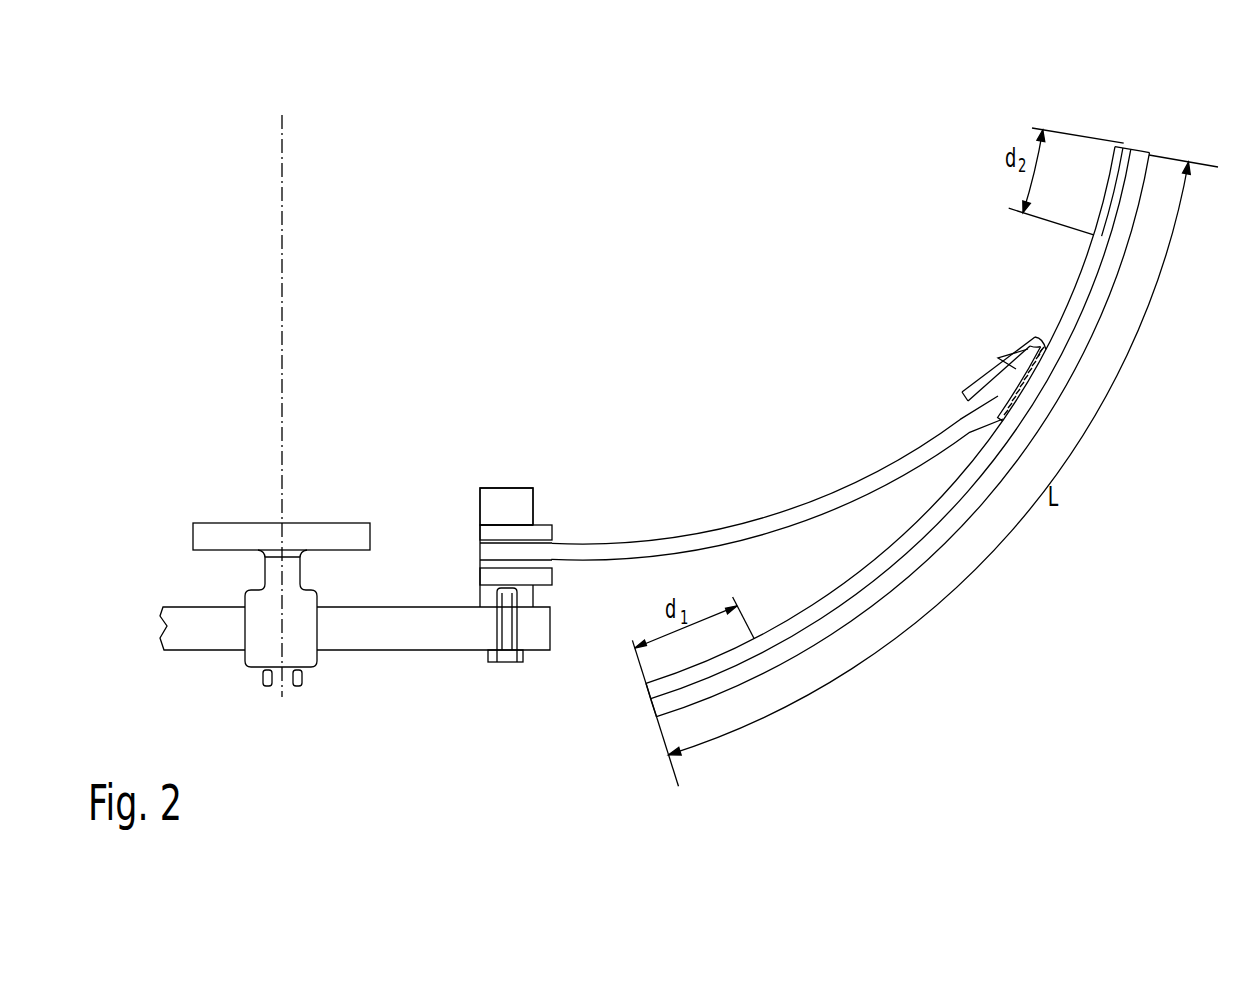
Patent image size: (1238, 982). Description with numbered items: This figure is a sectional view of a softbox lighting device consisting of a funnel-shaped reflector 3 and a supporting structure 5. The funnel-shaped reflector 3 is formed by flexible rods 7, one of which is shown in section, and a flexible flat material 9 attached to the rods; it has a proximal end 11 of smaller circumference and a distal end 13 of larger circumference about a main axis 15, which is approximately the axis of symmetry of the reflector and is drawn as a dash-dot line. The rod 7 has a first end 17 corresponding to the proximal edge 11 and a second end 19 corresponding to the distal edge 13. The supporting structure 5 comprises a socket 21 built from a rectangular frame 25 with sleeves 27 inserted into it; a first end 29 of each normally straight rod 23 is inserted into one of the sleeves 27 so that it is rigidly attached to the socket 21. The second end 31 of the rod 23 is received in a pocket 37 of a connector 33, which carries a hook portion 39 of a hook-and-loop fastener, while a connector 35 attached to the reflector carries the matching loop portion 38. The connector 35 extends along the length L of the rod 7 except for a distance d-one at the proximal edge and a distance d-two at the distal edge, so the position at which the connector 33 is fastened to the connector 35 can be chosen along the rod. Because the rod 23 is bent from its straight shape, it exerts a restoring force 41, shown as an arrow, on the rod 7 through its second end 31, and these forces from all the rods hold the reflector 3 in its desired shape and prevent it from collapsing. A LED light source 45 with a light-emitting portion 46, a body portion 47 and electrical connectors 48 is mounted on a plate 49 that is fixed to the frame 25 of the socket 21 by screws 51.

The funnel-shaped reflector 3 is at (1181, 99).
The supporting structure 5 is at (392, 452).
The rod 7 is at (1110, 258).
The flexible material 9 is at (1117, 145).
The proximal end 11 is at (648, 708).
The distal end 13 is at (1137, 149).
The main axis 15 is at (284, 200).
The first end of the rod 17 is at (652, 722).
The second end of the rod 19 is at (1151, 152).
The socket 21 is at (471, 478).
The rod 23 is at (764, 530).
The frame 25 is at (505, 498).
The sleeve 27 is at (544, 532).
The first end of the rod 29 is at (490, 555).
The second end of the rod 31 is at (1001, 352).
The connector 33 is at (958, 385).
The connector 35 is at (1092, 234).
The pocket 37 is at (1021, 340).
The loop portion 38 is at (1043, 345).
The hook portion 39 is at (1036, 345).
The force 41 is at (960, 360).
The light source 45 is at (219, 495).
The light-emitting portion 46 is at (193, 539).
The body portion 47 is at (318, 640).
The electrical connectors 48 is at (294, 689).
The plate 49 is at (208, 637).
The screws 51 is at (507, 662).